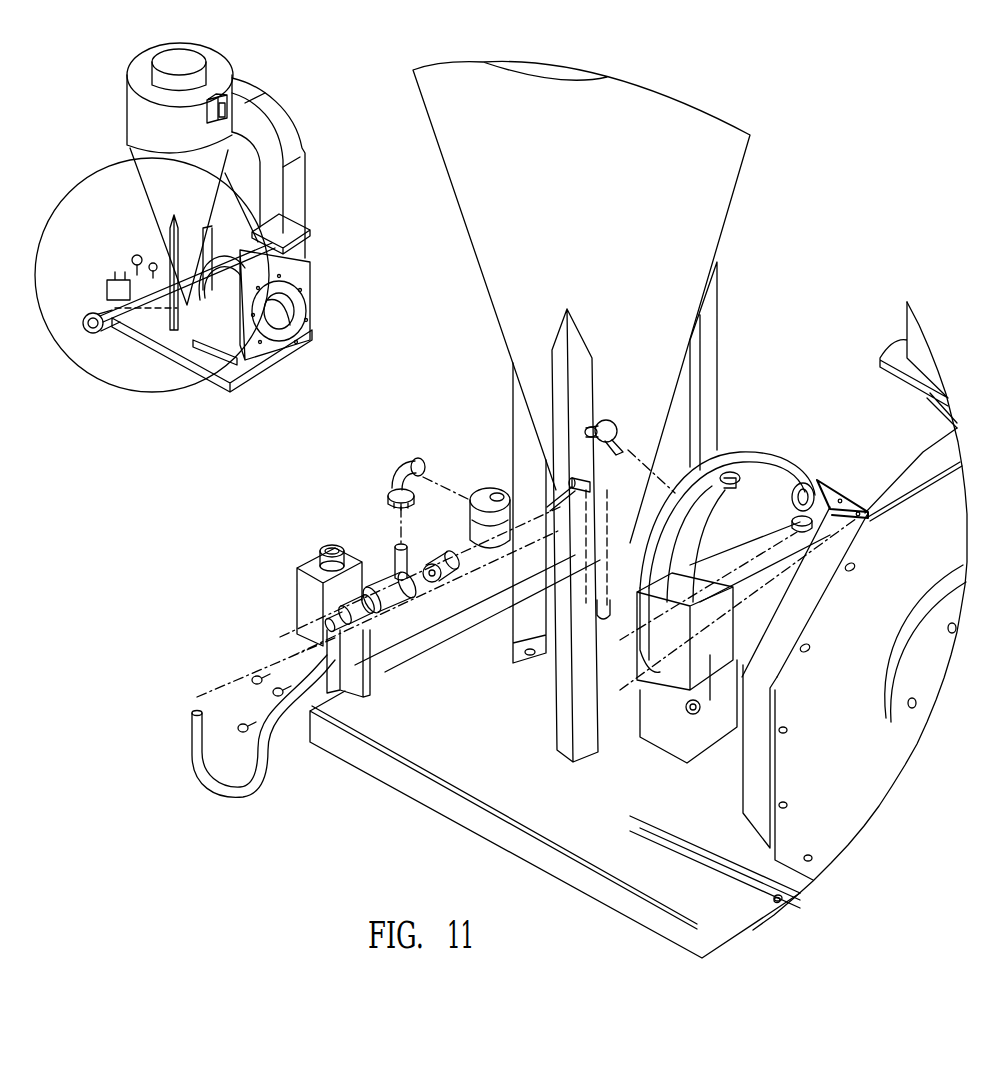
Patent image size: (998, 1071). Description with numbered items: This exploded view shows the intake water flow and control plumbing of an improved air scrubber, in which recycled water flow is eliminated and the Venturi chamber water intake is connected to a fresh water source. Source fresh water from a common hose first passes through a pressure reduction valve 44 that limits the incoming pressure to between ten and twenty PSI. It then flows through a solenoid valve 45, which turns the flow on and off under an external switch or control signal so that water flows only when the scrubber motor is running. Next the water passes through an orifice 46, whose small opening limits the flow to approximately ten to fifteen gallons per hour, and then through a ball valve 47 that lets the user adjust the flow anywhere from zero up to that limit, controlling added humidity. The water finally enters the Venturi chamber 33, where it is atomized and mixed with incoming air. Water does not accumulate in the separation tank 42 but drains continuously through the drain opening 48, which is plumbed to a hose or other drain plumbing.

The Venturi chamber 33 is at (760, 757).
The separation tank 42 is at (207, 136).
The pressure reduction valve 44 is at (330, 620).
The solenoid valve 45 is at (480, 487).
The orifice 46 is at (566, 472).
The ball valve 47 is at (620, 410).
The drain opening 48 is at (592, 620).